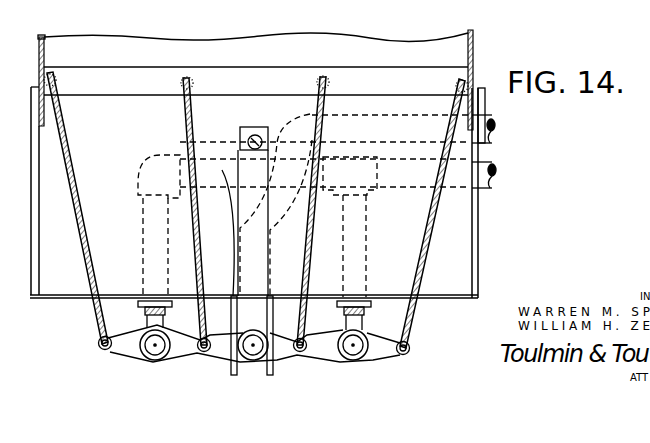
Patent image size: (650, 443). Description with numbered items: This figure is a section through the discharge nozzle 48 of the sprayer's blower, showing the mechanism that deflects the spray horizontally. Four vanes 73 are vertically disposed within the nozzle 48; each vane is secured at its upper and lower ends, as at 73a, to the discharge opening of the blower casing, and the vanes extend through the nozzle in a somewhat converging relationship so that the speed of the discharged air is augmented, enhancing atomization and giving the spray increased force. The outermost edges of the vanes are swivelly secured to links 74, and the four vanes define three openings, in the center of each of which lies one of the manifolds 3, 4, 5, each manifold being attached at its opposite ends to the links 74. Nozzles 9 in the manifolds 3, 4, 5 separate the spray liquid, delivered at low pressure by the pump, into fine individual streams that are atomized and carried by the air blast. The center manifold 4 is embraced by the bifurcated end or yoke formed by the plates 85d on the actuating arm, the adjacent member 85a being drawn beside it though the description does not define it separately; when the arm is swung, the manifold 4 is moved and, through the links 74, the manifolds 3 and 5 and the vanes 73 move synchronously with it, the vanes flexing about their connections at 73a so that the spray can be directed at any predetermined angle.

The nozzle 48 is at (82, 50).
The vanes 73 is at (70, 172).
The vane securing points 73a is at (315, 82).
The manifold 4 is at (278, 300).
The guide plate 85a is at (242, 146).
The plates 85d is at (227, 296).
The links 74 is at (127, 337).
The manifold 3 is at (142, 347).
The manifold 5 is at (402, 360).
The nozzles 9 is at (163, 362).